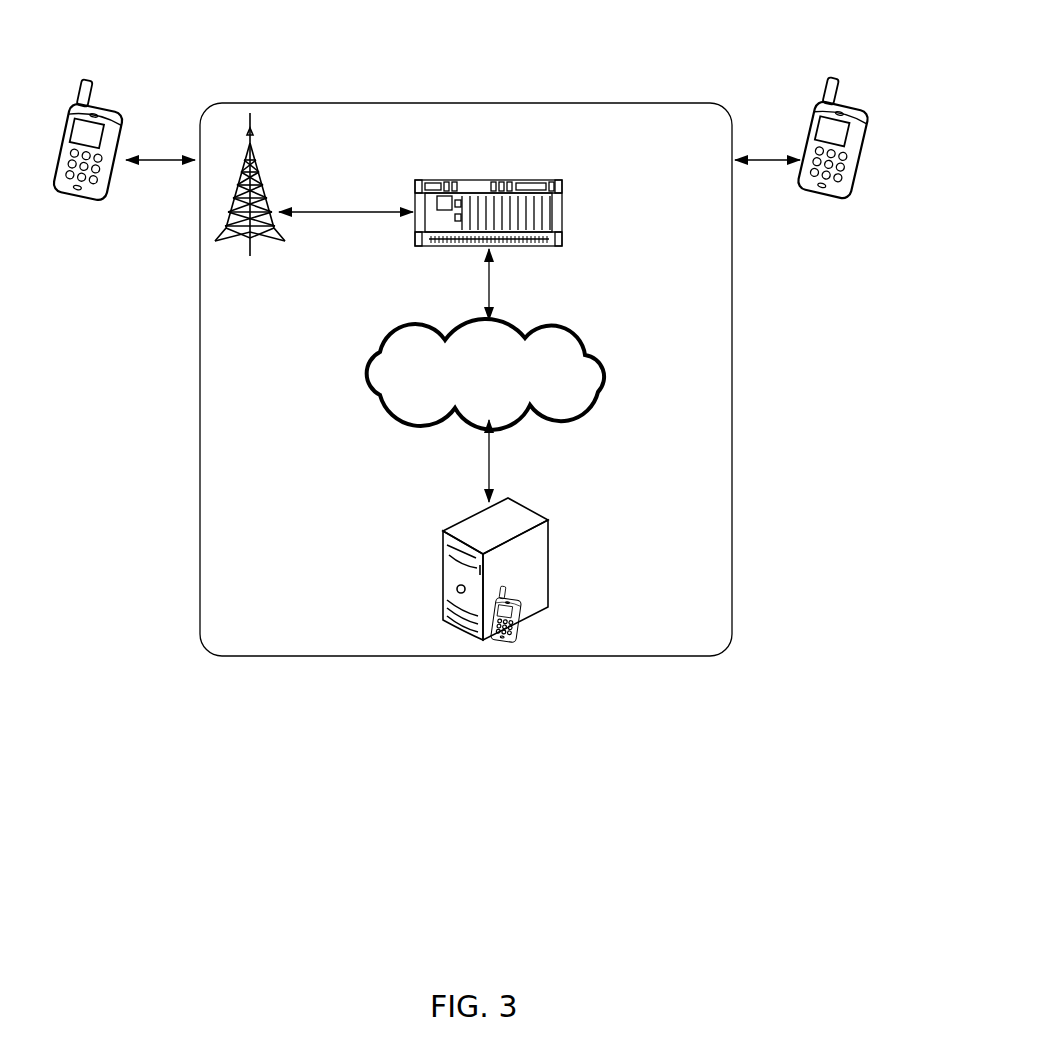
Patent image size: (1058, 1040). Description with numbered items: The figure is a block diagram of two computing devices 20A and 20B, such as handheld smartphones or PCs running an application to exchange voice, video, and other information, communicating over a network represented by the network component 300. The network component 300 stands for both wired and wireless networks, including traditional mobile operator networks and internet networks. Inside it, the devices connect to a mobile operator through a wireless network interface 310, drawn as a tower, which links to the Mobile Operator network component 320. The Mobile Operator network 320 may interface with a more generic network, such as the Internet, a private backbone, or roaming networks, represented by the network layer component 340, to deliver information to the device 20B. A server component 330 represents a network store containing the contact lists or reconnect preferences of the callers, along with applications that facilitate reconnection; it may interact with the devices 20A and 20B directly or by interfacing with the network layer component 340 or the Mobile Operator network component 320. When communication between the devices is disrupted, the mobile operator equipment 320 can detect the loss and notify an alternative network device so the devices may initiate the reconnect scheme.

The computing device 20A is at (113, 88).
The computing device 20B is at (858, 98).
The network component 300 is at (551, 98).
The wireless network interface 310 is at (265, 168).
The Mobile Operator network component 320 is at (493, 174).
The server component 330 is at (550, 507).
The network layer component 340 is at (568, 330).